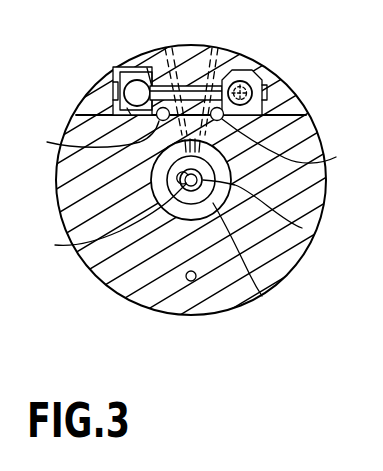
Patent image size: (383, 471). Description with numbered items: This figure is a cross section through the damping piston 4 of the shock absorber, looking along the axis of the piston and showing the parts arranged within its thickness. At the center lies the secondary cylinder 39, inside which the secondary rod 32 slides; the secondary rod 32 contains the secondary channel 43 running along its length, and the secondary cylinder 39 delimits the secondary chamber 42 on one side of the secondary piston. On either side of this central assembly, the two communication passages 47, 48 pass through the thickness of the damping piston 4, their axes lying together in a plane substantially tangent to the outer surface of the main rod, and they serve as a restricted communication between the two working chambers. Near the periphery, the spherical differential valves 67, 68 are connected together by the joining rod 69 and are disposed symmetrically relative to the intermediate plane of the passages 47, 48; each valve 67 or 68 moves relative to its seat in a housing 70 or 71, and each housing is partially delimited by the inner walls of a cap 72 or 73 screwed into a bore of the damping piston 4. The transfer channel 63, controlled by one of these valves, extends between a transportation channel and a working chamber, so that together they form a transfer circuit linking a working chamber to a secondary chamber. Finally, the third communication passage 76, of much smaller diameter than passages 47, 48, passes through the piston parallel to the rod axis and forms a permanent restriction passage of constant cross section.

The damping piston 4 is at (278, 248).
The secondary rod 32 is at (107, 227).
The secondary cylinder 39 is at (262, 296).
The secondary chamber 42 is at (302, 228).
The secondary channel 43 is at (181, 181).
The communication passage 47 is at (285, 139).
The communication passage 48 is at (95, 136).
The transfer channel 63 is at (242, 57).
The differential valve 67 is at (306, 114).
The differential valve 68 is at (143, 79).
The joining rod 69 is at (190, 85).
The housing 70 is at (252, 80).
The housing 71 is at (128, 112).
The cap 72 is at (264, 91).
The cap 73 is at (117, 72).
The third communication passage 76 is at (187, 276).